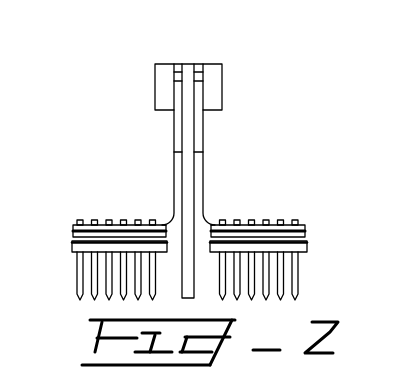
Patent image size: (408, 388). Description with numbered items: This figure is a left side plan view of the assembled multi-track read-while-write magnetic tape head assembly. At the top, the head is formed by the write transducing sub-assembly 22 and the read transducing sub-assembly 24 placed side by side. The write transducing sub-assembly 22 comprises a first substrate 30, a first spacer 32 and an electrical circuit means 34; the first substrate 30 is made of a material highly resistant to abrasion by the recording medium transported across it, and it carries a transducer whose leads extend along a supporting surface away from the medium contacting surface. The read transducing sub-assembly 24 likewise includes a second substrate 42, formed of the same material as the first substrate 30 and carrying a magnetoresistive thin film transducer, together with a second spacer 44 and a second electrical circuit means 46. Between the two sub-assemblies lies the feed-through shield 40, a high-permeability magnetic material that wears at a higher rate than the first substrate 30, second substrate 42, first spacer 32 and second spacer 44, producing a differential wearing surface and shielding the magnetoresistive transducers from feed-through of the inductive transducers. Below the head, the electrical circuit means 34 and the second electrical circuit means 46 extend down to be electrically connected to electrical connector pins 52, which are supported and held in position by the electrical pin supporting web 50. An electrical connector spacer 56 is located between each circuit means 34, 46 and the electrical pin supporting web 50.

The write transducing sub-assembly 22 is at (110, 80).
The read transducing sub-assembly 24 is at (228, 117).
The first substrate 30 is at (158, 85).
The first spacer 32 is at (178, 64).
The feed-through shield 40 is at (188, 64).
The second substrate 42 is at (217, 70).
The second spacer 44 is at (200, 76).
The electrical circuit means 34 is at (176, 148).
The second electrical circuit means 46 is at (203, 142).
The electrical pin supporting web 50 is at (303, 250).
The electrical connector pins 52 is at (300, 282).
The electrical connector spacer 56 is at (305, 238).